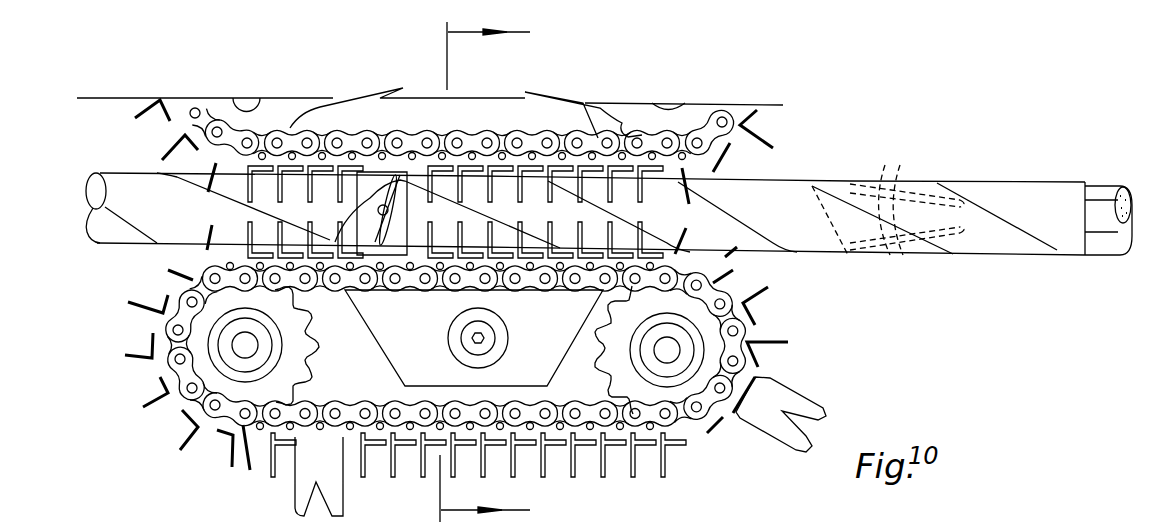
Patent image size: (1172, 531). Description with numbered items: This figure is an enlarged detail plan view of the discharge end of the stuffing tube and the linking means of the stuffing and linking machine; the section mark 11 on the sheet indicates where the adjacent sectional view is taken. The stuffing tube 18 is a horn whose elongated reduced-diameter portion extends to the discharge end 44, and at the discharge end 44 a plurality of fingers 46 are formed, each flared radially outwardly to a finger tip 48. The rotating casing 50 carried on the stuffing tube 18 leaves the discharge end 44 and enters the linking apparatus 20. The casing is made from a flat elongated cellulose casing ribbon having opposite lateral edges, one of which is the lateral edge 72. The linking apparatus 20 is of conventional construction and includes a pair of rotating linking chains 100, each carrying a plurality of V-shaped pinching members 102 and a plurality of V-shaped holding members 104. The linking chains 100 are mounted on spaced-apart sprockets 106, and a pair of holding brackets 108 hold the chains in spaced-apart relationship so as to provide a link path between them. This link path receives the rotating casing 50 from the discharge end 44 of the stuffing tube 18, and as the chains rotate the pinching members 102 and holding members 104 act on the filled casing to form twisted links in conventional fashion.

The section line of FIG. 11 is at (489, 266).
The stuffing tube 18 is at (1105, 175).
The linking apparatus 20 is at (804, 346).
The discharge end 44 is at (927, 253).
The fingers 46 is at (899, 164).
The finger tip 48 is at (857, 176).
The rotating casing 50 is at (1031, 178).
The lateral edge 72 is at (1057, 247).
The linking chains 100 is at (225, 146).
The V-shaped pinching members 102 is at (378, 265).
The V-shaped holding members 104 is at (752, 148).
The sprockets 106 is at (177, 118).
The holding brackets 108 is at (553, 127).